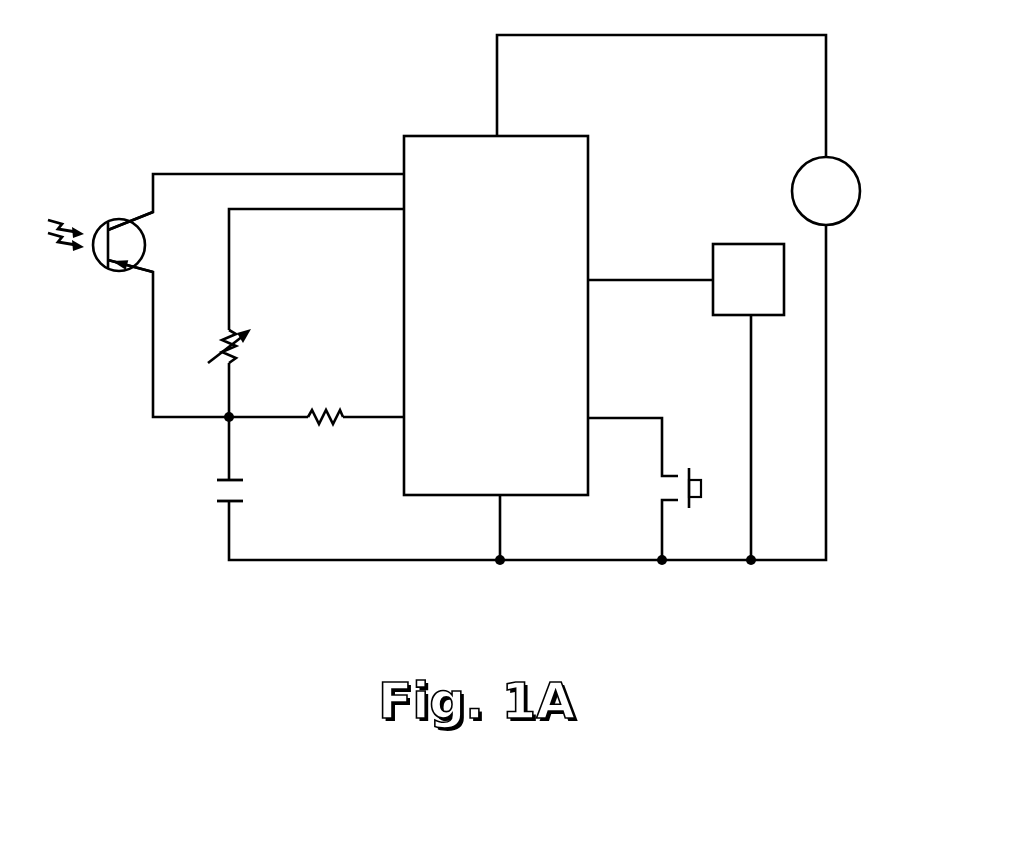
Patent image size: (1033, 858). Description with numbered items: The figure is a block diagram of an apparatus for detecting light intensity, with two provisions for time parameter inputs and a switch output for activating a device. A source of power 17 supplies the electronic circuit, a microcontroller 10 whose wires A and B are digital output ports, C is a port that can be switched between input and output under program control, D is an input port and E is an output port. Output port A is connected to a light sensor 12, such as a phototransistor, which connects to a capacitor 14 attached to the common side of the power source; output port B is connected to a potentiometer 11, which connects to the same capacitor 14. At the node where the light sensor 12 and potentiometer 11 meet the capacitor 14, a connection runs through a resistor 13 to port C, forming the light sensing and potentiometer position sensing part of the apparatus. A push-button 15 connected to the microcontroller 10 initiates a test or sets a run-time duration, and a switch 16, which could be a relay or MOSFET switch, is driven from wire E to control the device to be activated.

The microcontroller 10 is at (463, 134).
The user accessible potentiometer control 11 is at (225, 345).
The light sensor 12 is at (120, 272).
The resistor 13 is at (328, 410).
The capacitor 14 is at (222, 489).
The user accessible push-button switch 15 is at (703, 488).
The switch for activation of device 16 is at (755, 243).
The power supply to circuit 17 is at (860, 183).